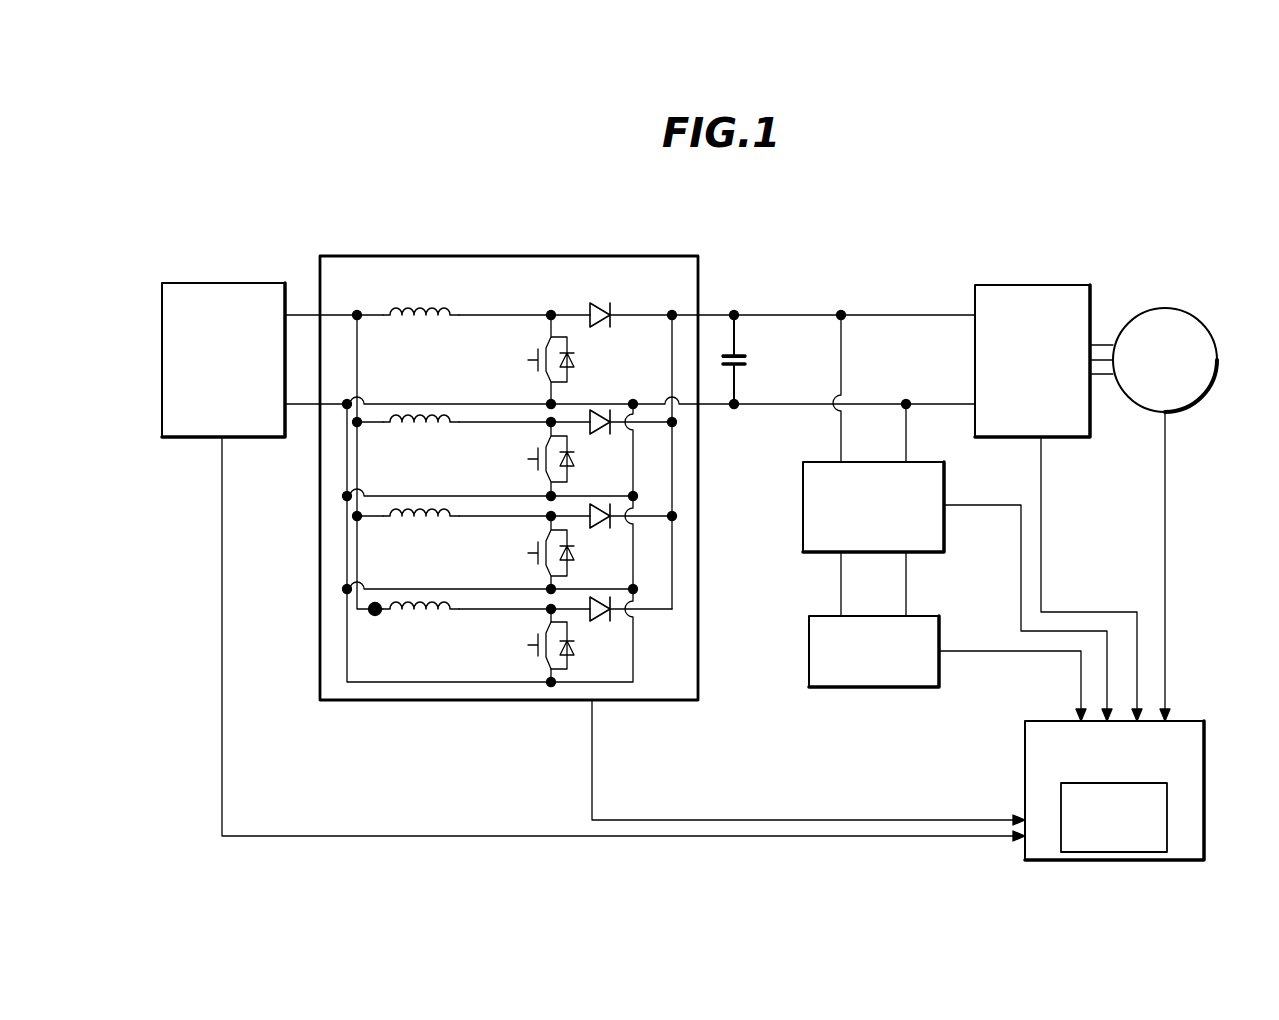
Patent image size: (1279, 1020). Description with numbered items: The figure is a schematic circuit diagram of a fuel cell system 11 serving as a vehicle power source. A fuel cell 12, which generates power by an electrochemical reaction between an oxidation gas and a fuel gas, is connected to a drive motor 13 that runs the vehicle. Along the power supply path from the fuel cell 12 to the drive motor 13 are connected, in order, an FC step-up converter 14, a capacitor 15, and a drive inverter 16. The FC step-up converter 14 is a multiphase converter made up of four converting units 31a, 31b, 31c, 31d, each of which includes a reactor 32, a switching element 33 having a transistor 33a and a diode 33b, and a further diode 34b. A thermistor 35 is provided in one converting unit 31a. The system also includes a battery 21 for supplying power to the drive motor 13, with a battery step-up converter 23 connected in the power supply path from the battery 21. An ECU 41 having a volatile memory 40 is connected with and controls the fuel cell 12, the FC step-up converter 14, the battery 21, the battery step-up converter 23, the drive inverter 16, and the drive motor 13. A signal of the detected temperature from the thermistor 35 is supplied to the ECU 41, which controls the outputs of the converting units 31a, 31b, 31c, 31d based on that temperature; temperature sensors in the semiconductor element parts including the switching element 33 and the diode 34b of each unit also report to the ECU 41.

The fuel cell system 11 is at (996, 198).
The fuel cell 12 is at (220, 283).
The drive motor 13 is at (1170, 308).
The FC step-up converter 14 is at (530, 256).
The capacitor 15 is at (738, 353).
The drive inverter 16 is at (1034, 285).
The battery 21 is at (809, 640).
The battery step-up converter 23 is at (803, 510).
The converting unit 31a is at (457, 693).
The converting unit 31b is at (350, 544).
The converting unit 31c is at (348, 458).
The converting unit 31d is at (342, 363).
The reactor 32 is at (430, 614).
The switching element 33 is at (530, 699).
The transistor 33a is at (541, 657).
The diode 33b is at (573, 656).
The diode 34b is at (596, 620).
The thermistor 35 is at (374, 616).
The volatile memory 40 is at (1167, 817).
The ECU 41 is at (1148, 760).